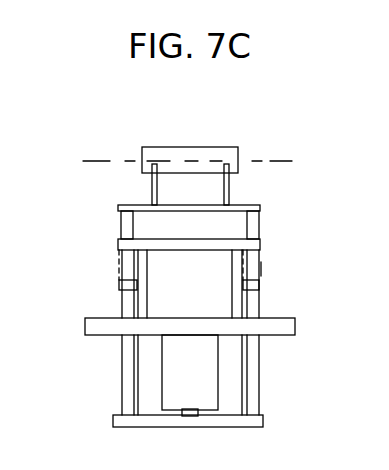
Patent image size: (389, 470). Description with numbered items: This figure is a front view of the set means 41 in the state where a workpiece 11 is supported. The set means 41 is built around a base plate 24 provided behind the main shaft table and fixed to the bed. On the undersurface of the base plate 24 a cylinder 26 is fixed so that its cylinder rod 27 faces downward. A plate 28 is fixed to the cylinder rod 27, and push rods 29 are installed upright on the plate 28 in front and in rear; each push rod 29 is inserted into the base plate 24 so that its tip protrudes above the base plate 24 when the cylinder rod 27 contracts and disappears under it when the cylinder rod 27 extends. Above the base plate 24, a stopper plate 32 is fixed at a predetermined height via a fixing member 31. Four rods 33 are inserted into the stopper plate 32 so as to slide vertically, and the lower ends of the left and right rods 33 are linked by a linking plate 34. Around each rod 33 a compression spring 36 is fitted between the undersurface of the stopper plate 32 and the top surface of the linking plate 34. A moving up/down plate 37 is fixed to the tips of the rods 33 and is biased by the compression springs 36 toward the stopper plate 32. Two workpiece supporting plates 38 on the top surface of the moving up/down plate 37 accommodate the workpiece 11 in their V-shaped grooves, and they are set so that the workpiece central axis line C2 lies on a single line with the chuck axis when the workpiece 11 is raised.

The workpiece 11 is at (172, 147).
The workpiece central axis line C2 is at (275, 160).
The set means 41 is at (82, 203).
The workpiece supporting plate 38 is at (152, 195).
The moving up/down plate 37 is at (173, 203).
The rod 33 is at (127, 226).
The stopper plate 32 is at (253, 245).
The compression spring 36 is at (120, 257).
The linking plate 34 is at (123, 284).
The fixing member 31 is at (170, 300).
The base plate 24 is at (295, 326).
The cylinder 26 is at (205, 362).
The cylinder rod 27 is at (195, 410).
The push rod 29 is at (130, 398).
The plate 28 is at (143, 425).